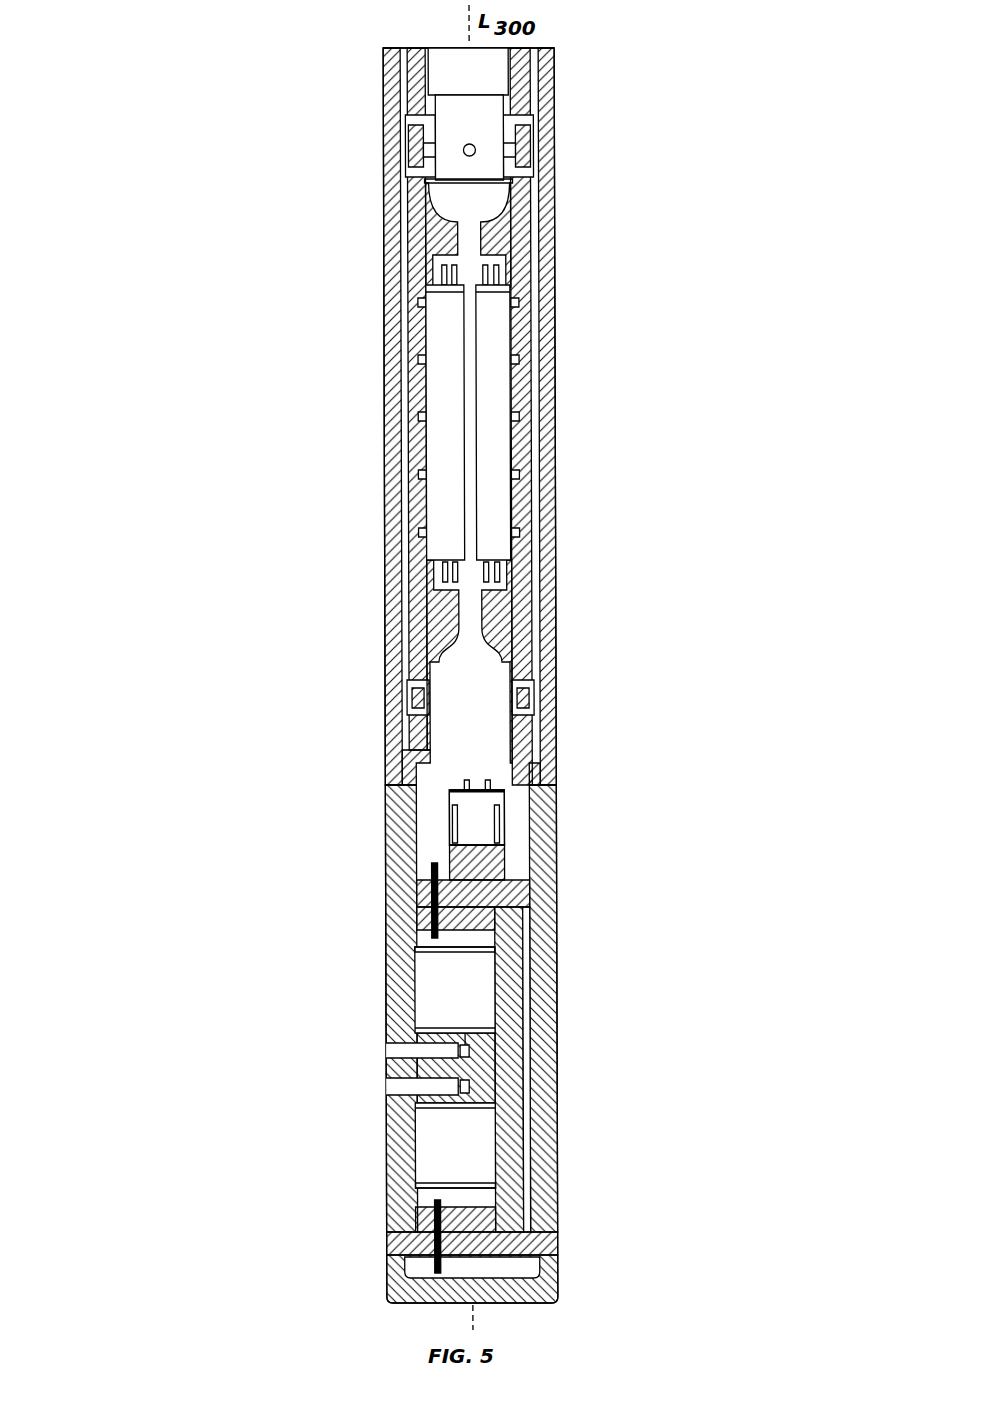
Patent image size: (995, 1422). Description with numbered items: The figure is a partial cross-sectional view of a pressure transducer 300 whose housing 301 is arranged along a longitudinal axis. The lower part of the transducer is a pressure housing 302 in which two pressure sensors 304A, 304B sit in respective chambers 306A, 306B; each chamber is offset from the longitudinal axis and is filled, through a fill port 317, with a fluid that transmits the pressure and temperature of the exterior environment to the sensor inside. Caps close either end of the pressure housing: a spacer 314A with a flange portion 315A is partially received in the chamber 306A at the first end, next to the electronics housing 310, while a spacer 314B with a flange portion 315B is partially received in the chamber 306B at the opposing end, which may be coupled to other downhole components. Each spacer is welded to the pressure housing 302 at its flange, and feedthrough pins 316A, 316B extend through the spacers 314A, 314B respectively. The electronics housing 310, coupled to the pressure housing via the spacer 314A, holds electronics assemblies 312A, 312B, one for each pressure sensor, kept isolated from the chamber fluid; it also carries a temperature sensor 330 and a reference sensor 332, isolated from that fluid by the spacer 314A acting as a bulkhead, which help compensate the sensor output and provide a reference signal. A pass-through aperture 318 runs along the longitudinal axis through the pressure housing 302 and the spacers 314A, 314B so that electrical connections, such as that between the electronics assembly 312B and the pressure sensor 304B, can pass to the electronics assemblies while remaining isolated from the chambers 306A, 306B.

The pressure transducer 300 is at (222, 95).
The housing 301 is at (370, 494).
The pressure housing 302 is at (545, 998).
The pressure sensor 304A is at (478, 972).
The pressure sensor 304B is at (478, 1143).
The chamber 306A is at (410, 945).
The chamber 306B is at (418, 1185).
The electronics housing 310 is at (543, 266).
The electronics assembly 312A is at (450, 318).
The electronics assembly 312B is at (487, 373).
The spacer 314A is at (505, 868).
The spacer 314B is at (545, 1253).
The flange portion 315A is at (512, 893).
The flange portion 315B is at (548, 1237).
The feedthrough pin 316A is at (433, 881).
The feedthrough pin 316B is at (433, 1233).
The fill port 317 is at (397, 1053).
The pass-through aperture 318 is at (530, 1028).
The temperature sensor 330 is at (507, 818).
The reference sensor 332 is at (476, 817).